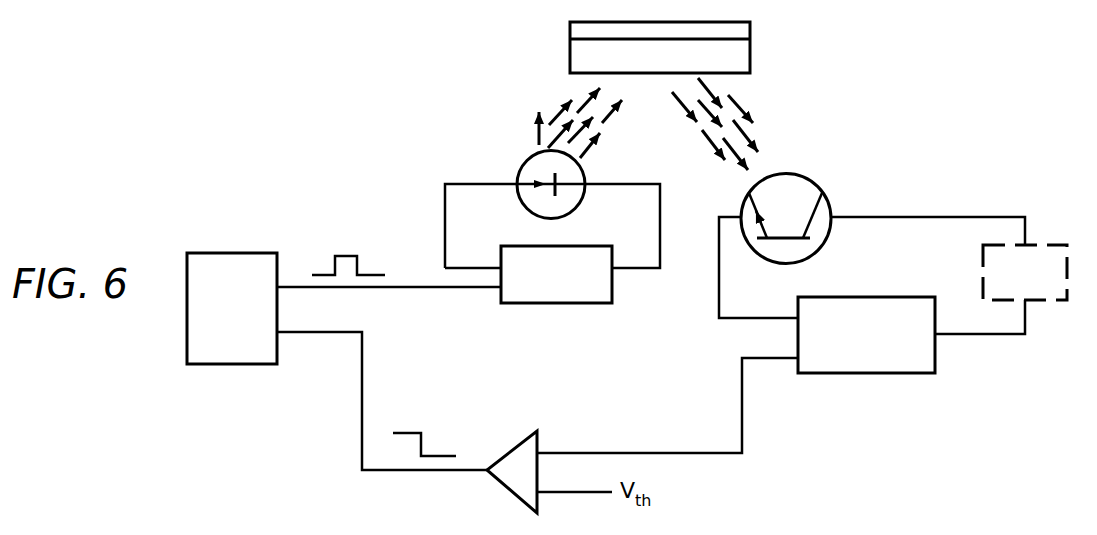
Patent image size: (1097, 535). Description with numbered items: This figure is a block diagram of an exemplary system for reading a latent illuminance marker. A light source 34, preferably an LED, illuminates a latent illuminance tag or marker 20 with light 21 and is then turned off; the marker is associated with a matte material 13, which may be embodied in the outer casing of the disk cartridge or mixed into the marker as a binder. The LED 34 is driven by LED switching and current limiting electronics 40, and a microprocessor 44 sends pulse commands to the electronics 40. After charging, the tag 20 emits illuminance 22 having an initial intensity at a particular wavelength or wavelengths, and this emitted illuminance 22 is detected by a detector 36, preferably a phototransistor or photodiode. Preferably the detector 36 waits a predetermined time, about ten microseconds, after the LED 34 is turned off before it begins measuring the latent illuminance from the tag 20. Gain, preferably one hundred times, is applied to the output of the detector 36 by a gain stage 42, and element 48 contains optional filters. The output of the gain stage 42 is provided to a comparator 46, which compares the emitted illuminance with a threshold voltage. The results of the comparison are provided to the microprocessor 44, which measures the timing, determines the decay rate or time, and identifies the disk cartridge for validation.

The matte material 13 is at (742, 30).
The latent illuminance tag or marker 20 is at (645, 64).
The light 21 is at (523, 121).
The emitted illuminance 22 is at (748, 100).
The light source 34 is at (522, 160).
The detector 36 is at (770, 206).
The LED switching and current limiting electronics 40 is at (540, 282).
The gain stage 42 is at (854, 339).
The microprocessor 44 is at (219, 297).
The comparator 46 is at (508, 481).
The optional filters 48 is at (1012, 279).